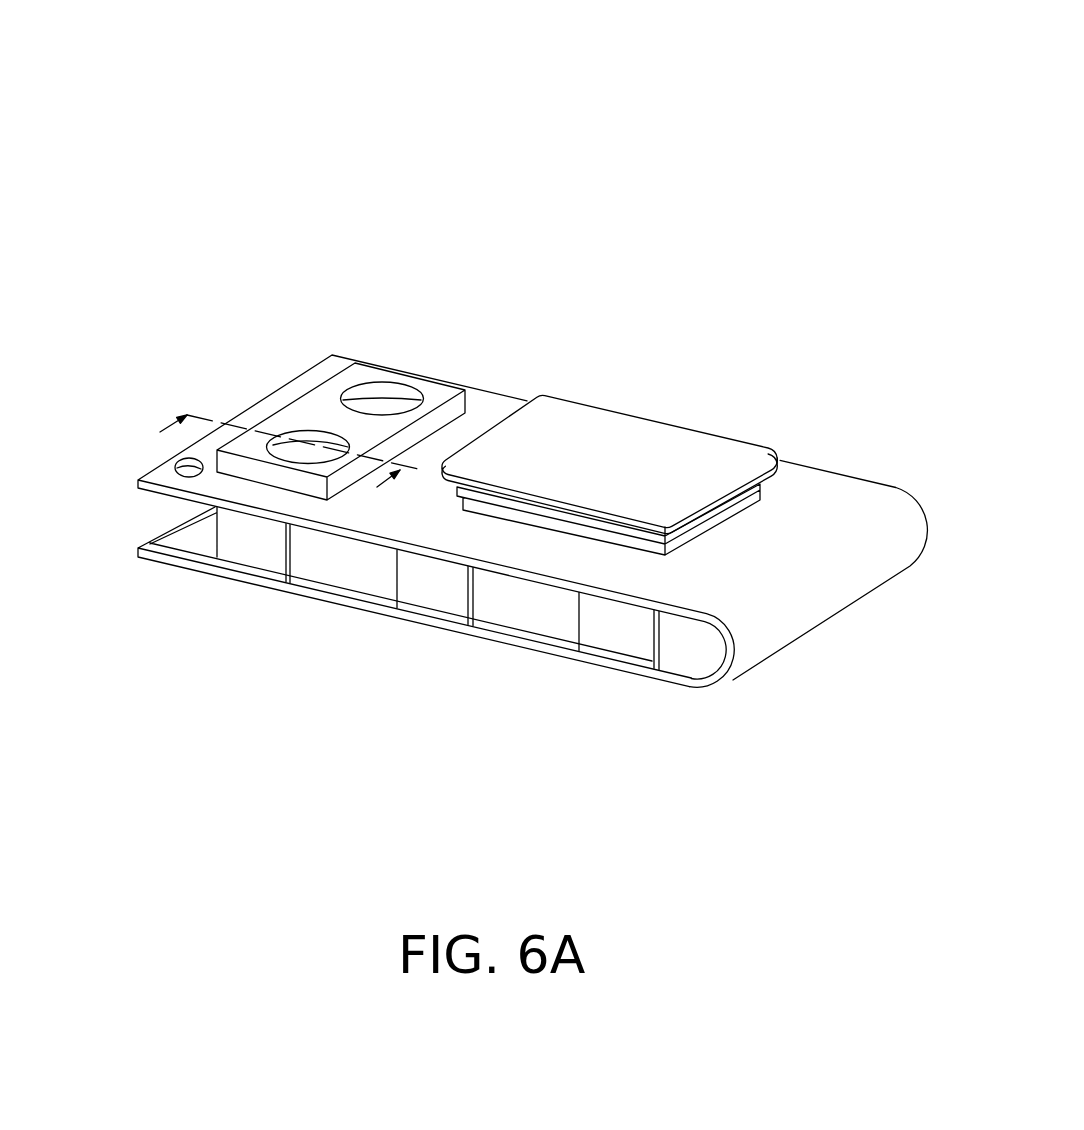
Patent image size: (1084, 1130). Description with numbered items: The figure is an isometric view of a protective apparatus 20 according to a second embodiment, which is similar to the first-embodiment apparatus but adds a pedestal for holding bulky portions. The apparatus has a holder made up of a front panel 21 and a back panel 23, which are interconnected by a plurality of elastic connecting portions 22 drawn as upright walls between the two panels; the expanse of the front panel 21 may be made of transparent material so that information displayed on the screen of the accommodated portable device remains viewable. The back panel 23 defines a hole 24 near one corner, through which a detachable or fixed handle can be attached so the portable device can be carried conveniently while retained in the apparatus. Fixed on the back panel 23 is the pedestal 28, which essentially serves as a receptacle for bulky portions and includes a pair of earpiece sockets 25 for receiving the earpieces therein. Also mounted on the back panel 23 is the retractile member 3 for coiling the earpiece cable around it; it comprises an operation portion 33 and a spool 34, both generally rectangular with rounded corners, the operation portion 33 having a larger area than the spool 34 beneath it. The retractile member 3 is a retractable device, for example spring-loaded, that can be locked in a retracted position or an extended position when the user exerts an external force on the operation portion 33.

The protective apparatus 20 is at (474, 47).
The front panel 21 is at (323, 597).
The elastic connecting portions 22 is at (615, 632).
The back panel 23 is at (680, 612).
The hole 24 is at (176, 467).
The earpiece sockets 25 is at (305, 435).
The pedestal 28 is at (440, 392).
The retractile member 3 is at (908, 438).
The operation portion 33 is at (740, 453).
The spool 34 is at (748, 497).